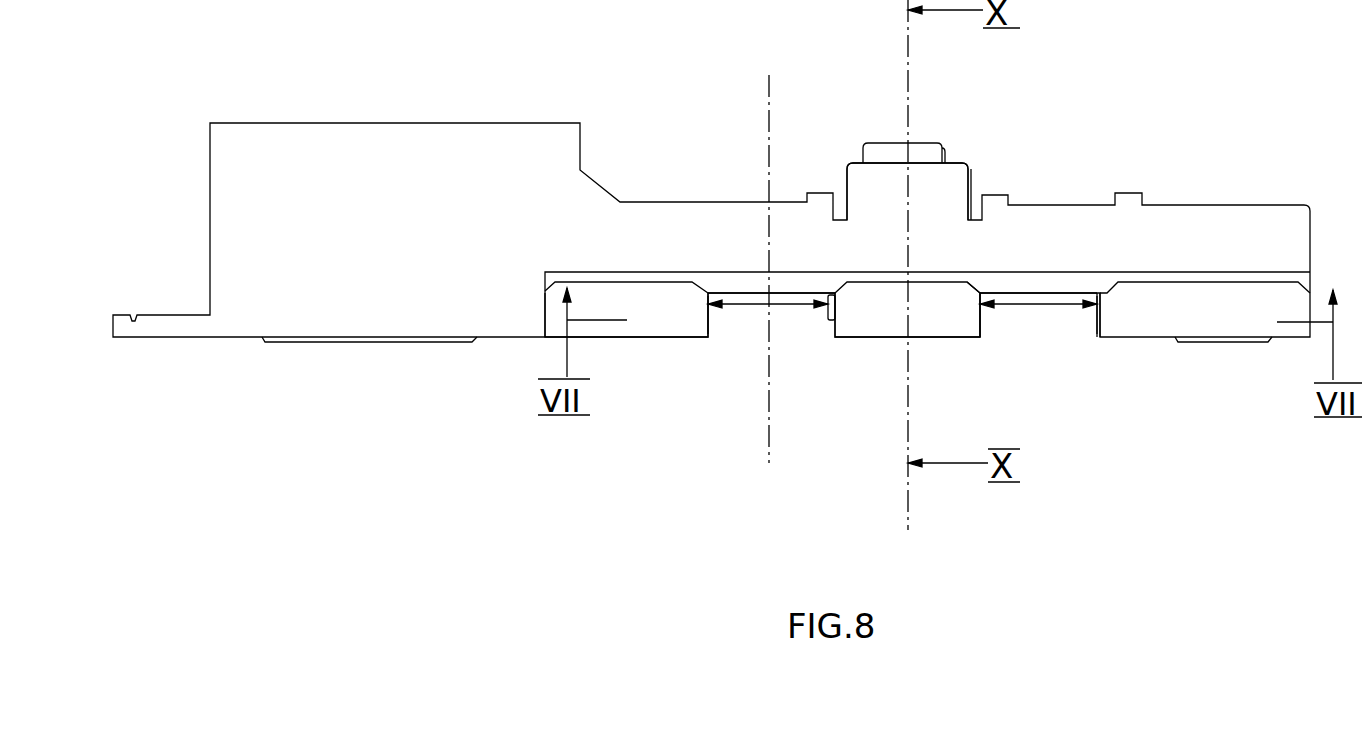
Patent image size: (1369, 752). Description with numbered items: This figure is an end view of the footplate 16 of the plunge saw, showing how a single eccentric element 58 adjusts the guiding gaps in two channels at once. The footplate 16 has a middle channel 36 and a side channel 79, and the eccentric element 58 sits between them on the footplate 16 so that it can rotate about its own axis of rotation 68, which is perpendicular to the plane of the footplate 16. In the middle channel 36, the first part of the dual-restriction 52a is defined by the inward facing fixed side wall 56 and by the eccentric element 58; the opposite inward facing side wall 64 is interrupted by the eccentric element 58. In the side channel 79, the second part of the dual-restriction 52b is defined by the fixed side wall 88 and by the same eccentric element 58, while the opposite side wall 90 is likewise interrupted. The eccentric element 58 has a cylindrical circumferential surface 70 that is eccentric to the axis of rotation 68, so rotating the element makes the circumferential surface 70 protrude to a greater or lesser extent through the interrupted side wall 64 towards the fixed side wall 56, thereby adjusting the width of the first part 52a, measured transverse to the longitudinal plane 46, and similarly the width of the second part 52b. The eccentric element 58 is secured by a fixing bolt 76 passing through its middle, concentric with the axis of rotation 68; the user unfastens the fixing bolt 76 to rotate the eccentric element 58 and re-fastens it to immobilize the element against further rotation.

The footplate 16 is at (1212, 261).
The middle channel 36 is at (746, 325).
The longitudinal plane 46 is at (773, 97).
The first part of dual-restriction 52a is at (757, 308).
The second part of dual-restriction 52b is at (1065, 305).
The fixed side wall 56 is at (712, 322).
The eccentric element 58 is at (977, 162).
The interrupted side wall 64 is at (833, 340).
The axis of rotation 68 is at (909, 490).
The cylindrical circumferential surface 70 is at (820, 318).
The fixing bolt 76 is at (922, 143).
The side channel 79 is at (1047, 318).
The fixed side wall 88 is at (1097, 325).
The interrupted side wall 90 is at (982, 323).